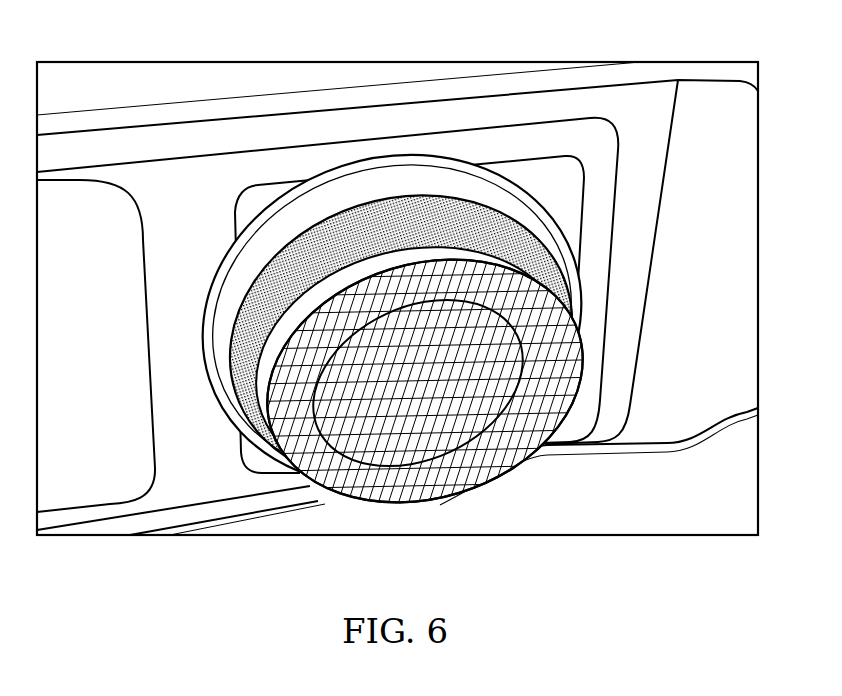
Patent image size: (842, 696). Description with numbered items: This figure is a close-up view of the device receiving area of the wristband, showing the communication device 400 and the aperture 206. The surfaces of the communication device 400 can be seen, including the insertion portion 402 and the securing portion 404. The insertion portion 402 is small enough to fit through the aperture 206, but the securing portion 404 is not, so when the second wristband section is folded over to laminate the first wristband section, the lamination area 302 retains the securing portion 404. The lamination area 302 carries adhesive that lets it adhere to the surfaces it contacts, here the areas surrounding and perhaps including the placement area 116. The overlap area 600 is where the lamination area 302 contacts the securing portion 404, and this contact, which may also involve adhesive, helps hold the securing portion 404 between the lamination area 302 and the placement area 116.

The lamination area 302 is at (186, 200).
The securing portion 404 is at (385, 197).
The overlap area 600 is at (465, 197).
The placement area 116 is at (557, 187).
The aperture 206 is at (557, 257).
The insertion portion 402 is at (427, 443).
The communication device 400 is at (391, 300).